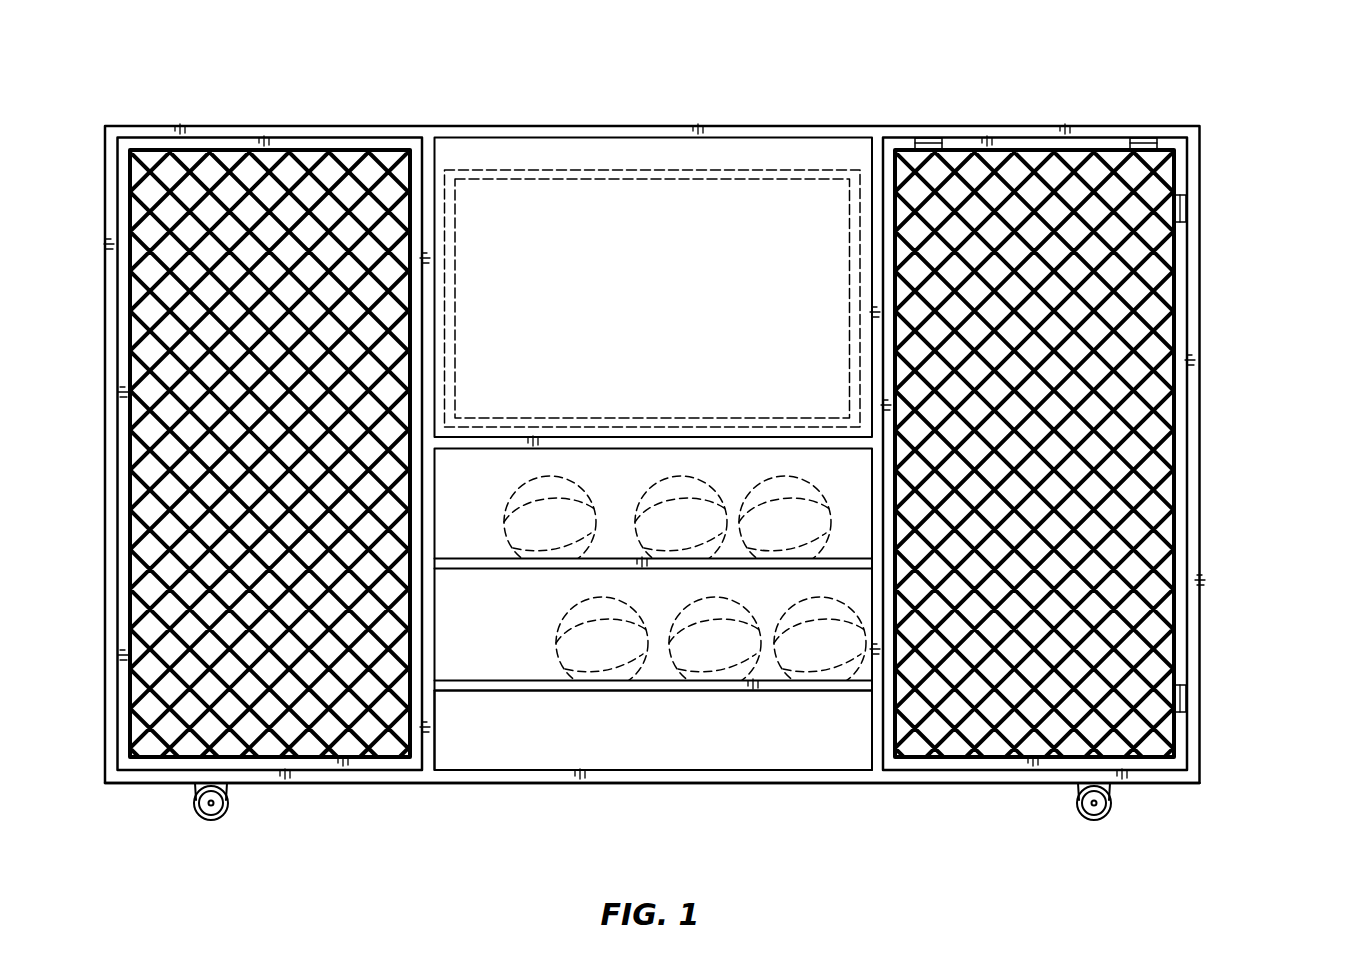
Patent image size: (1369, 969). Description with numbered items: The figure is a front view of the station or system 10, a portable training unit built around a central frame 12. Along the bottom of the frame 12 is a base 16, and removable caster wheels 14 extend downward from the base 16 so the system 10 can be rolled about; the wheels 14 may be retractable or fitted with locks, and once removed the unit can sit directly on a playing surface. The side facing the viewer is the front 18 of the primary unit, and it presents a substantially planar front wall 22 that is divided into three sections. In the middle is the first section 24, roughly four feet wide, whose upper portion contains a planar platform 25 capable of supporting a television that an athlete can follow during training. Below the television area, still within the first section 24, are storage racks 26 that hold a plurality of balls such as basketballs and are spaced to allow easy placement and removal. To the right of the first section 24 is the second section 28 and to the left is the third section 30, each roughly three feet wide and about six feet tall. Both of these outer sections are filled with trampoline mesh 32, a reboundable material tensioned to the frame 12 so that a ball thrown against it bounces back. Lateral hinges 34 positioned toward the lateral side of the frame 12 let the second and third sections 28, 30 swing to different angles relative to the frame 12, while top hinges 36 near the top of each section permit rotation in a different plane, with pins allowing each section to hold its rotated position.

The system 10 is at (1248, 85).
The frame 12 is at (1201, 628).
The wheels 14 is at (200, 808).
The base 16 is at (1158, 779).
The front 18 is at (545, 732).
The front wall 22 is at (828, 157).
The first section 24 is at (878, 113).
The platform 25 is at (766, 444).
The storage racks 26 is at (464, 567).
The second section 28 is at (1199, 113).
The third section 30 is at (105, 113).
The trampoline mesh 32 is at (157, 319).
The lateral hinges 34 is at (1187, 208).
The top hinges 36 is at (930, 140).